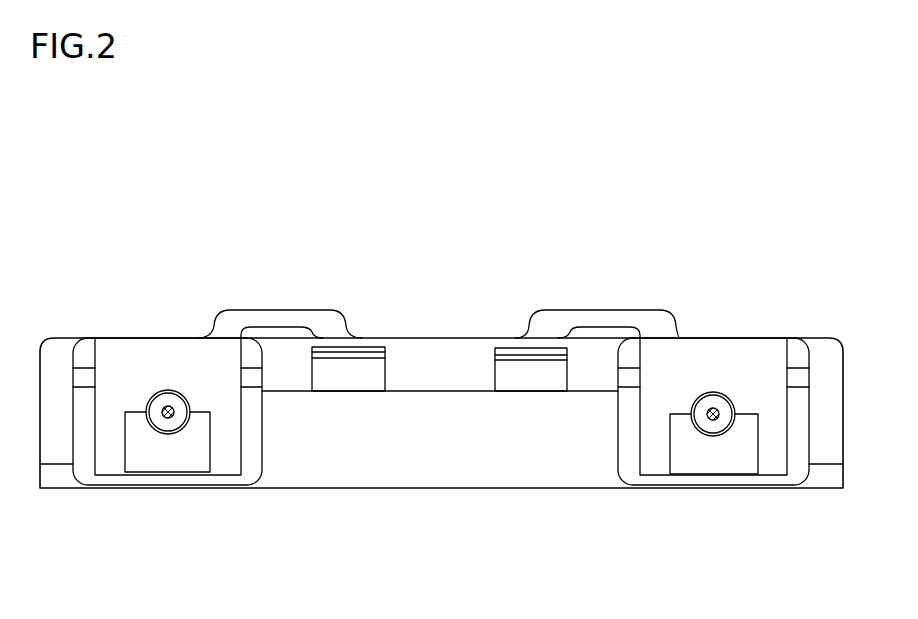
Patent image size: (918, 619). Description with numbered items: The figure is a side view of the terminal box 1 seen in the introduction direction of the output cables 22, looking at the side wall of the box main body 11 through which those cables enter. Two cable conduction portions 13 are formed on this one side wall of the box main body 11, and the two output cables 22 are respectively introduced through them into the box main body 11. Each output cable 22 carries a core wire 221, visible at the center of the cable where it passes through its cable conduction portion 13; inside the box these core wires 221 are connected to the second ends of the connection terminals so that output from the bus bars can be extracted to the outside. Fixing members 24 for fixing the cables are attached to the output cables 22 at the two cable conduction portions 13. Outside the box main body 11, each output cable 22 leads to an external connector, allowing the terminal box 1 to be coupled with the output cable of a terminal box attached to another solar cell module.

The terminal box 1 is at (814, 338).
The box main body 11 is at (427, 472).
The cable conduction portion 13 is at (167, 390).
The output cable 22 is at (182, 430).
The core wire 221 is at (168, 416).
The fixing member 24 is at (128, 355).